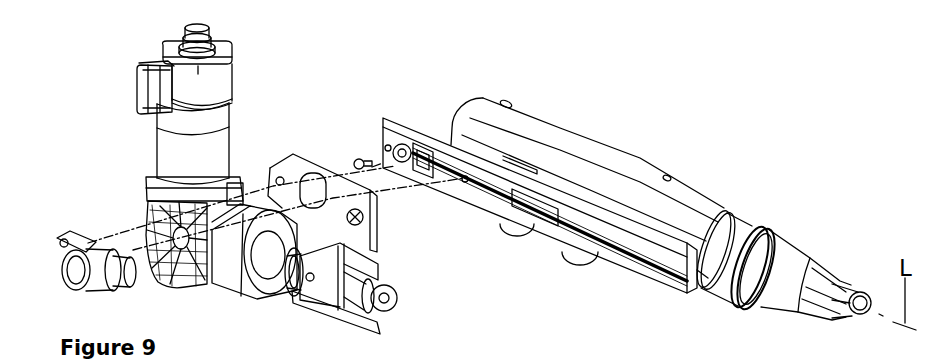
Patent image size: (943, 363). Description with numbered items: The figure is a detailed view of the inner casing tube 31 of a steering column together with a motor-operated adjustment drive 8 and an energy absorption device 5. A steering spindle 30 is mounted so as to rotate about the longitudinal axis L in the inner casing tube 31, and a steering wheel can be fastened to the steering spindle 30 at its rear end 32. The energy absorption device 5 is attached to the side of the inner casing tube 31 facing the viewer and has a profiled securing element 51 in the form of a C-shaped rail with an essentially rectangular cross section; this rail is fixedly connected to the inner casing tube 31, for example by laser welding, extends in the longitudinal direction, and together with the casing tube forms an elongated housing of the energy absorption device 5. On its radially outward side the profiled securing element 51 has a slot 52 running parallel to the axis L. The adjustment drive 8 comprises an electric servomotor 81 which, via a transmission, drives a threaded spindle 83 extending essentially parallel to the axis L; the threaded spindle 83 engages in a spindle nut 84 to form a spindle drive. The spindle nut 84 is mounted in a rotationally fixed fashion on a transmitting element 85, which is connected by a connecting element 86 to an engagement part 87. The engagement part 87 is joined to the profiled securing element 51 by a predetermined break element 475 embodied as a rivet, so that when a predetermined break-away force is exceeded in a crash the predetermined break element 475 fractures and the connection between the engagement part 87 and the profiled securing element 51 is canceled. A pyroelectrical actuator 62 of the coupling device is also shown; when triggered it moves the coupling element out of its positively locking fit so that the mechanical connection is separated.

The energy absorption device 5 is at (654, 289).
The motor-operated adjustment drive 8 is at (140, 149).
The steering spindle 30 is at (798, 257).
The inner casing tube 31 is at (715, 204).
The rear end 32 is at (857, 290).
The profiled securing element 51 is at (583, 213).
The slot 52 is at (600, 241).
The pyroelectrical actuator 62 is at (78, 272).
The electric servomotor 81 is at (190, 87).
The threaded spindle 83 is at (243, 288).
The spindle nut 84 is at (285, 273).
The transmitting element 85 is at (347, 260).
The connecting element 86 is at (352, 211).
The engagement part 87 is at (487, 188).
The predetermined break element 475 is at (359, 157).